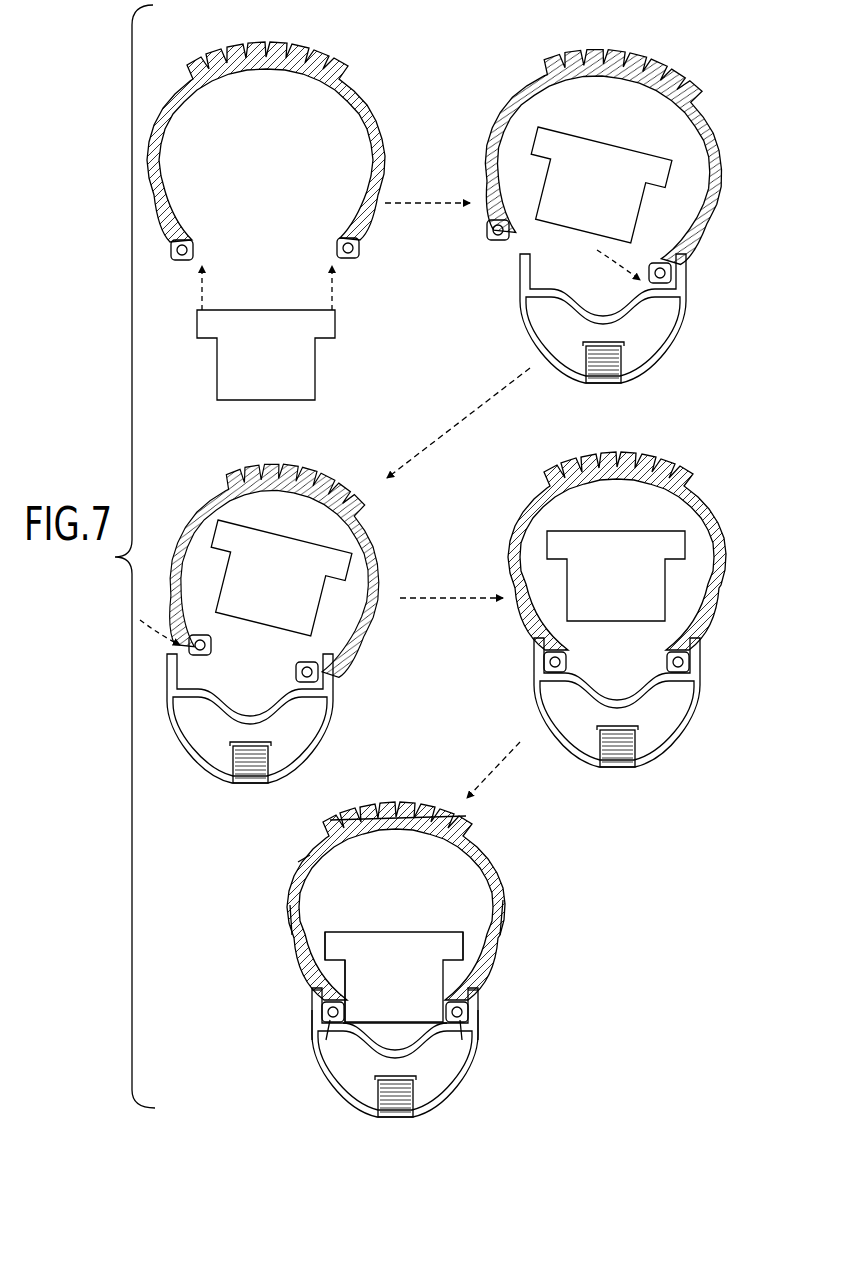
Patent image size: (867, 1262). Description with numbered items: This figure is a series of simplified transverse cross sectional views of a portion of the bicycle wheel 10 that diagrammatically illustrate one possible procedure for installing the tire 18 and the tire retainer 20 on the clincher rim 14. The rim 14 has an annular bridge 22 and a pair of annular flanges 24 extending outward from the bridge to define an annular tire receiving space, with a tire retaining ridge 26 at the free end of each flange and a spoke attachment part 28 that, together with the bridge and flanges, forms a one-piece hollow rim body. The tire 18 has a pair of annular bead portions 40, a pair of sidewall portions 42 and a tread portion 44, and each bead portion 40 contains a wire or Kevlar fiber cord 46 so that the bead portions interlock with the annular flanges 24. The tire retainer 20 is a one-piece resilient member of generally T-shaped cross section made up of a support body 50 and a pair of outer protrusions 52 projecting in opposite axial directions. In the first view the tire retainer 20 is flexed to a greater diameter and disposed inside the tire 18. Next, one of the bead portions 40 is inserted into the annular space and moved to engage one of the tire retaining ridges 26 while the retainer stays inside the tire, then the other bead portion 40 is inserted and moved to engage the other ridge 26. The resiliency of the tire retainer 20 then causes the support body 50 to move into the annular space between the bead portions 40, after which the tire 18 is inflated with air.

The tire assembly 10 is at (268, 888).
The clincher rim 14 is at (470, 1065).
The tire 18 is at (298, 862).
The tire retainer 20 is at (390, 930).
The annular bridge 22 is at (375, 1045).
The annular flanges 24 is at (312, 1025).
The tire retaining ridges 26 is at (315, 990).
The spoke attachment part 28 is at (440, 1100).
The annular bead portions 40 is at (330, 1040).
The sidewall portions 42 is at (290, 905).
The tread portion 44 is at (405, 808).
The wire or Kevlar fiber cord 46 is at (322, 1010).
The support body 50 is at (392, 995).
The outer protrusions 52 is at (325, 940).